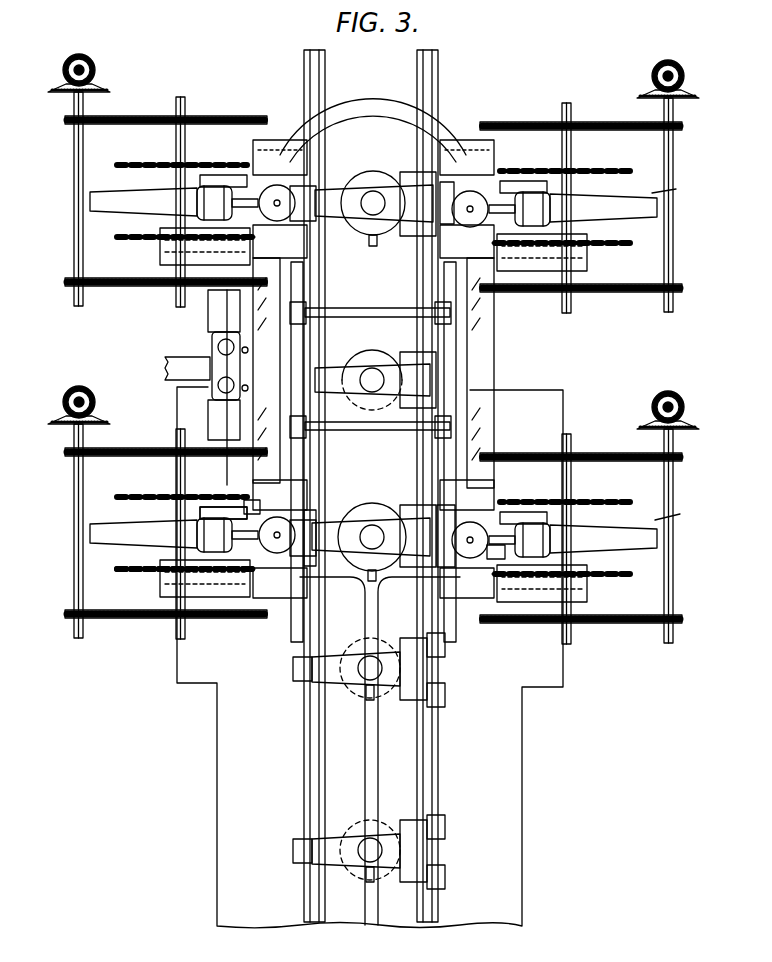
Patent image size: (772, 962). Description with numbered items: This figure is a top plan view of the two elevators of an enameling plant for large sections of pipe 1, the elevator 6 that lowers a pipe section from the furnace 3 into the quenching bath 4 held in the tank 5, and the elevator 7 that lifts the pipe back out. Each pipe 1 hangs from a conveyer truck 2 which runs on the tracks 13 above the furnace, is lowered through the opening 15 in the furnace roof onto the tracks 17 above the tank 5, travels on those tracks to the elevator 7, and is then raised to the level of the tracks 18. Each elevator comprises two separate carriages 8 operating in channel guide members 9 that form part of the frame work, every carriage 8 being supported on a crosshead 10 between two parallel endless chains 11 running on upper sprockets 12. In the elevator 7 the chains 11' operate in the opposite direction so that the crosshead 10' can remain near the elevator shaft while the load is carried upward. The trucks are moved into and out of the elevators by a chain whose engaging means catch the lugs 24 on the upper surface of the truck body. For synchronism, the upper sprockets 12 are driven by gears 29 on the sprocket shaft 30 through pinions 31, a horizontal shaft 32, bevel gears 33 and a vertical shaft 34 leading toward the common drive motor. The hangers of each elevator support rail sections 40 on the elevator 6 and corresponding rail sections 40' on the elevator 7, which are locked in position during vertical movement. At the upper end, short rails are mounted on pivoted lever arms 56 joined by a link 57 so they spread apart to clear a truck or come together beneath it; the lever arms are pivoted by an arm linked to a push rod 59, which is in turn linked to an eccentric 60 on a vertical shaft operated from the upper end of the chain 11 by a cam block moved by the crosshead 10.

The pipe 1 is at (375, 182).
The conveyer truck 2 is at (360, 226).
The furnace 3 is at (216, 705).
The quenching bath 4 is at (373, 128).
The tank 5 is at (444, 124).
The elevator 6 is at (686, 519).
The elevator 7 is at (683, 194).
The carriage 8 is at (130, 205).
The channel guide member 9 is at (276, 140).
The crosshead 10 is at (223, 539).
The crosshead 10' is at (219, 176).
The endless chain 11 is at (358, 588).
The endless chain 11' is at (179, 149).
The upper sprocket 12 is at (139, 241).
The track 13 is at (437, 742).
The opening 15 is at (348, 581).
The track 17 is at (320, 305).
The track 18 is at (306, 70).
The lug 24 is at (310, 678).
The gear 29 is at (142, 116).
The sprocket shaft 30 is at (186, 150).
The pinion 31 is at (66, 287).
The horizontal shaft 32 is at (74, 195).
The bevel gear 33 is at (64, 73).
The vertical shaft 34 is at (95, 63).
The rail section 40 is at (379, 523).
The rail section 40' is at (372, 185).
The pivoted lever arm 56 is at (288, 508).
The link 57 is at (373, 316).
The push rod 59 is at (248, 380).
The eccentric 60 is at (212, 360).